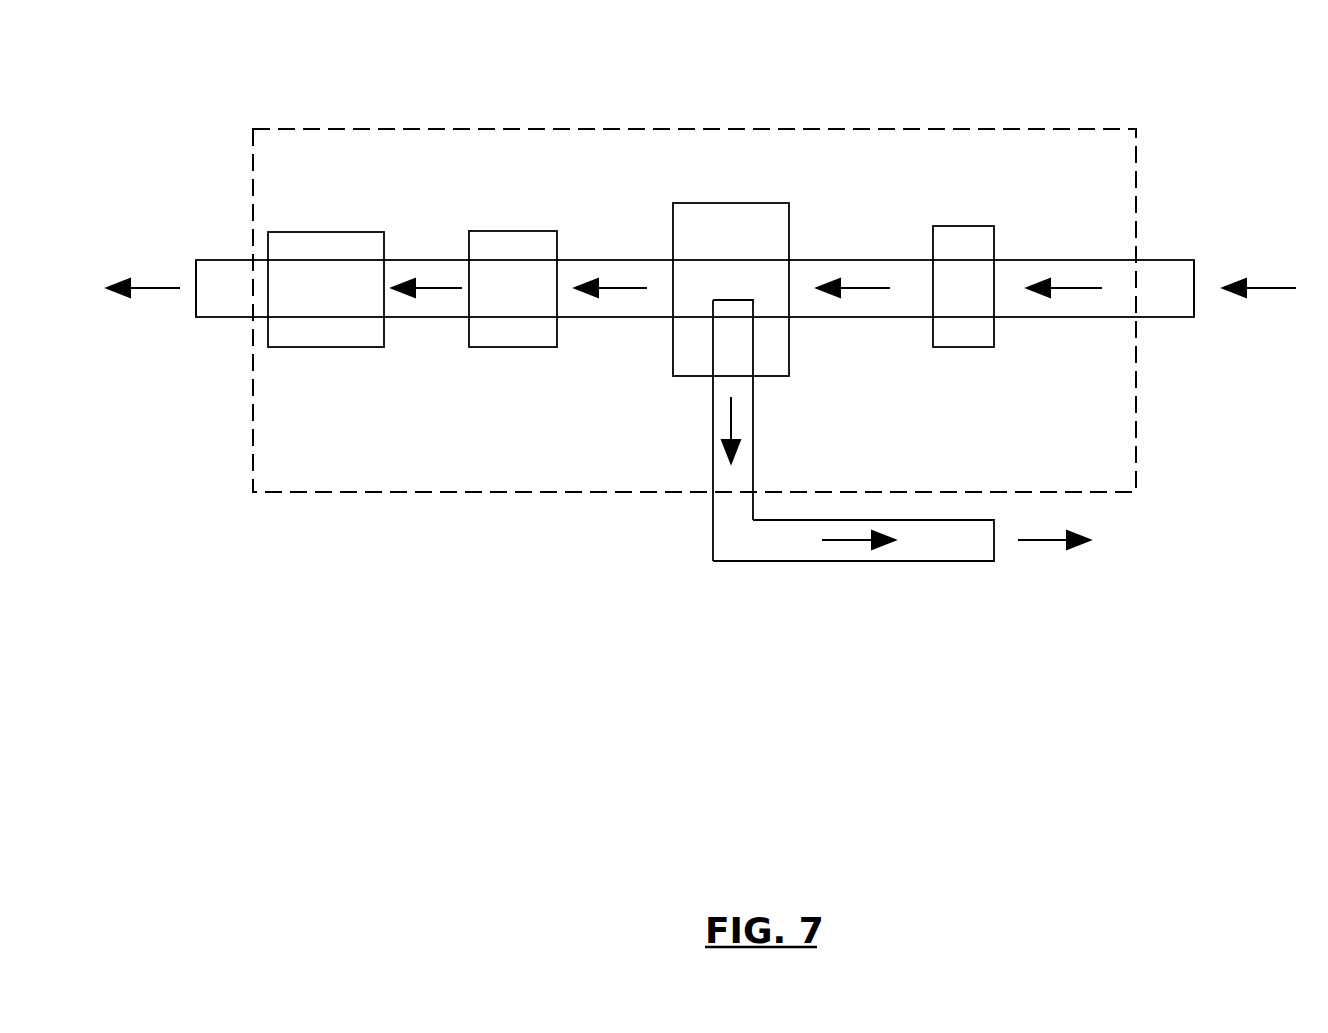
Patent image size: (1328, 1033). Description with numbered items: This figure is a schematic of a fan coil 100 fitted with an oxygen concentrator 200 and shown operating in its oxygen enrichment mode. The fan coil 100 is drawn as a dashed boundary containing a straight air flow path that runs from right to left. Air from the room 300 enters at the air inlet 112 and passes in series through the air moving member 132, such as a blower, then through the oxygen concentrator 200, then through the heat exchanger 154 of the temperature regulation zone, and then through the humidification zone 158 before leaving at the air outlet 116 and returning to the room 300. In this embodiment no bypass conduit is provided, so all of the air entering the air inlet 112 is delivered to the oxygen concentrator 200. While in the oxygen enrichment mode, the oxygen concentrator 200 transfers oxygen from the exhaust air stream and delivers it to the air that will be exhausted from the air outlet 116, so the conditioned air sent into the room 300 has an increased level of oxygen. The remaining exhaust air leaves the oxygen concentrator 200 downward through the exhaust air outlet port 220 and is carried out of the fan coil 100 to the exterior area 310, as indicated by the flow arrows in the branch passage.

The fan coil 100 is at (298, 94).
The air inlet 112 is at (1122, 260).
The air outlet 116 is at (240, 260).
The air moving member 132 is at (970, 347).
The heat exchanger 154 is at (468, 340).
The humidification zone 158 is at (315, 348).
The oxygen concentrator 200 is at (673, 357).
The exhaust air outlet port 220 is at (718, 490).
The room 300 is at (172, 359).
The exterior area 310 is at (1057, 609).